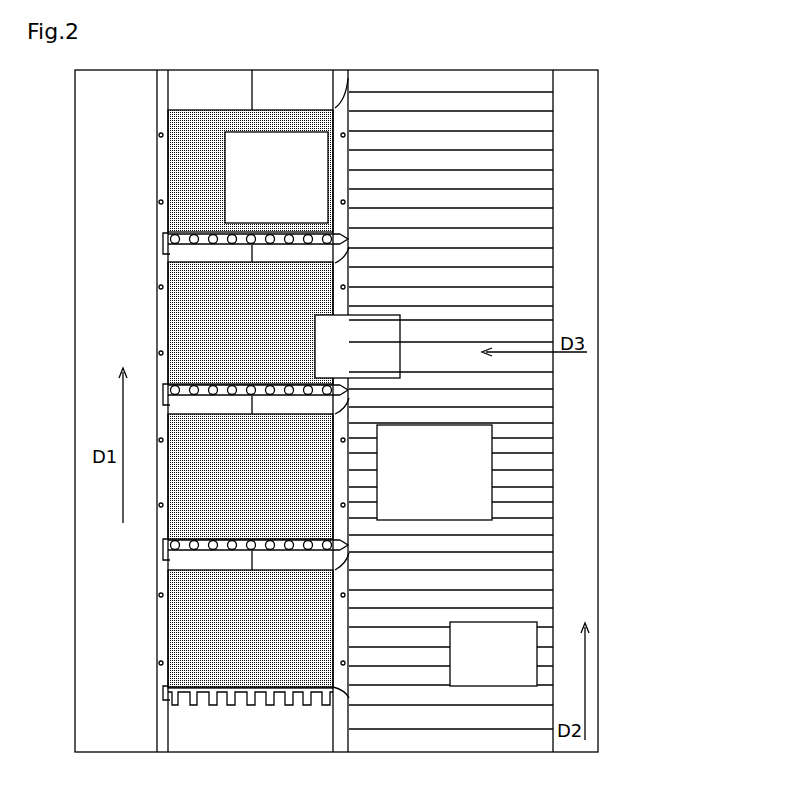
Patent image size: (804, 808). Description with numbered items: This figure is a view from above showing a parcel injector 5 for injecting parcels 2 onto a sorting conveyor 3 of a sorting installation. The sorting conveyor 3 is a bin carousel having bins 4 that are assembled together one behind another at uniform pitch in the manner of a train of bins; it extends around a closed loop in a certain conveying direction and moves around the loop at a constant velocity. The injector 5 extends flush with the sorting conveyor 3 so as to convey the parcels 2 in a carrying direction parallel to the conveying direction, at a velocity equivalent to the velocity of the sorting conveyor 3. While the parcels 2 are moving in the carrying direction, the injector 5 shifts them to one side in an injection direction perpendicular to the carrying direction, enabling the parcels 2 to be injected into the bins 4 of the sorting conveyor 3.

The parcel 2 is at (467, 467).
The sorting conveyor 3 is at (158, 724).
The bin 4 is at (158, 617).
The parcel injector 5 is at (553, 540).